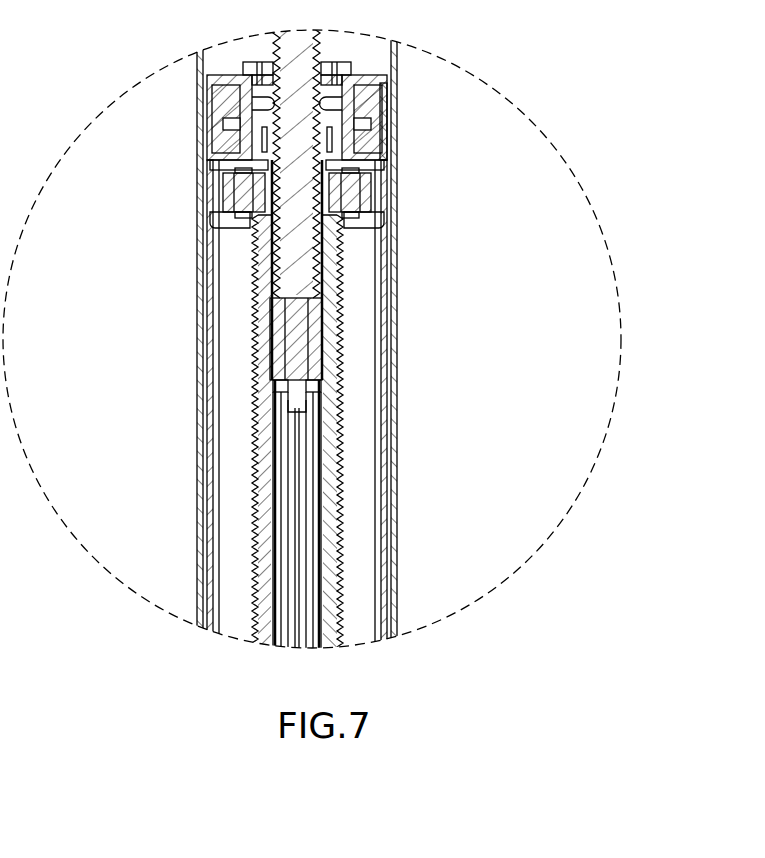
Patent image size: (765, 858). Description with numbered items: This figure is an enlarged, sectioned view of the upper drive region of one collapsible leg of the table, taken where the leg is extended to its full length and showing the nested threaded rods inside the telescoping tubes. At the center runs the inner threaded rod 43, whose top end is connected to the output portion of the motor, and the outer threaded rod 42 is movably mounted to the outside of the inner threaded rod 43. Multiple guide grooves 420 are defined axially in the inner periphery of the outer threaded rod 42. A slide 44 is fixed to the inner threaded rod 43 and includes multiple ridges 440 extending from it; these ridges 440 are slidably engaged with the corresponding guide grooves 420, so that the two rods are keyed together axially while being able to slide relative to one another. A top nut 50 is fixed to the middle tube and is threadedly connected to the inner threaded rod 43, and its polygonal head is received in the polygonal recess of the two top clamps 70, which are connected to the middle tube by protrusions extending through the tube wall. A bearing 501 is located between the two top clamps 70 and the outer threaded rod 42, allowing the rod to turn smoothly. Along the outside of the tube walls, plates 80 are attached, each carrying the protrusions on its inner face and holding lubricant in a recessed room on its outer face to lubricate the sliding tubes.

The top nut 50 is at (342, 70).
The top clamp 70 is at (387, 82).
The inner threaded rod 43 is at (252, 105).
The bearing 501 is at (240, 192).
The plate 80 is at (387, 165).
The outer threaded rod 42 is at (337, 250).
The slide 44 is at (273, 325).
The ridge 440 is at (252, 347).
The guide groove 420 is at (277, 517).